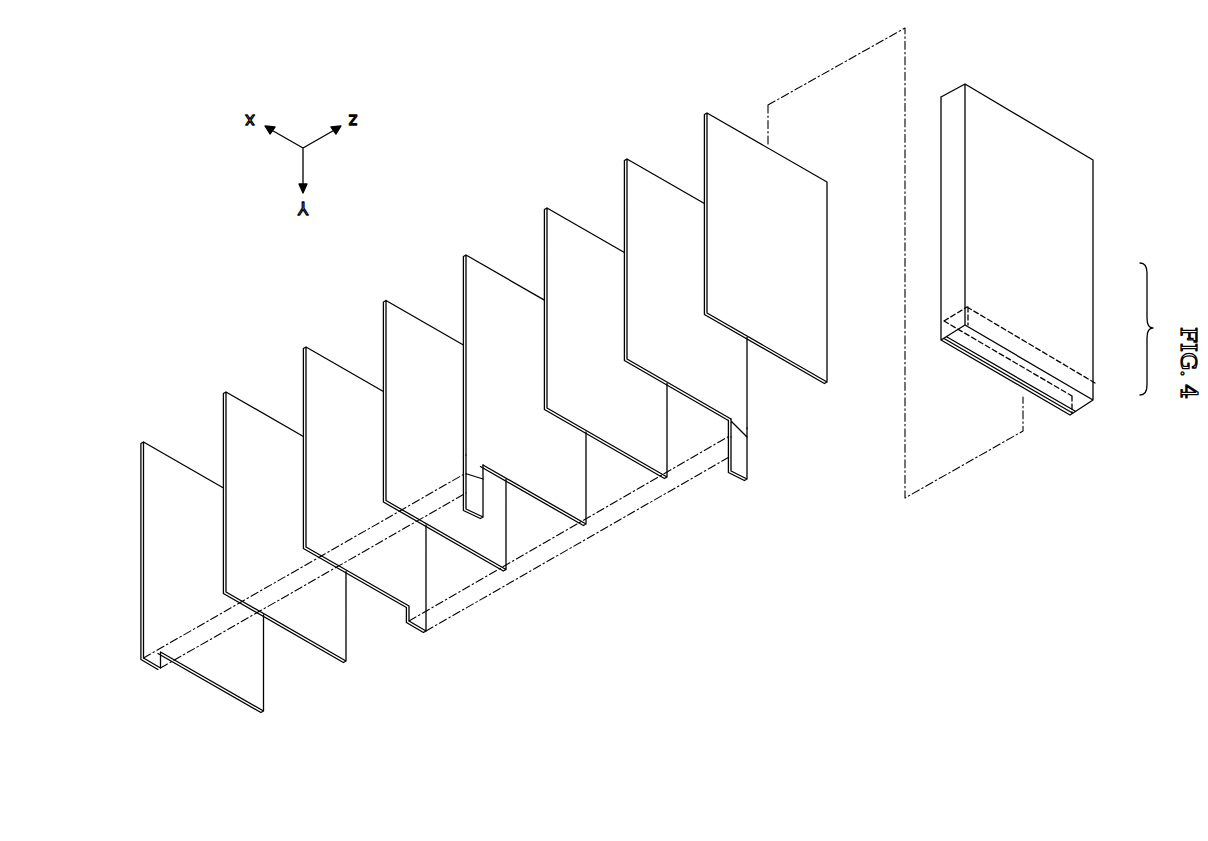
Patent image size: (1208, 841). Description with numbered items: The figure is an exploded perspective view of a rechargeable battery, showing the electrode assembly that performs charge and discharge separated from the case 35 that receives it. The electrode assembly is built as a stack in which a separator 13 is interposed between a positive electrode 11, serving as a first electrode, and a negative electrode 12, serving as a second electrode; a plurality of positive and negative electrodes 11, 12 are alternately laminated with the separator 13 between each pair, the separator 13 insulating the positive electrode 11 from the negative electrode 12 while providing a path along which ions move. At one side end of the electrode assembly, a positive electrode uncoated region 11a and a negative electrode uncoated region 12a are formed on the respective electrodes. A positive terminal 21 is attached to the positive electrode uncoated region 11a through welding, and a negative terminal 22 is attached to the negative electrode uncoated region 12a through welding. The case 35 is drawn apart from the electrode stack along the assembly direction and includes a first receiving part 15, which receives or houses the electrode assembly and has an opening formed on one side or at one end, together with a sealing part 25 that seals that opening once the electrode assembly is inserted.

The positive electrode 11 is at (625, 158).
The positive electrode uncoated region 11a is at (749, 438).
The negative electrode 12 is at (464, 253).
The negative electrode uncoated region 12a is at (467, 471).
The separator 13 is at (705, 112).
The first receiving part 15 is at (1093, 264).
The positive terminal 21 is at (742, 482).
The negative terminal 22 is at (483, 493).
The sealing part 25 is at (1093, 380).
The case 35 is at (1157, 329).